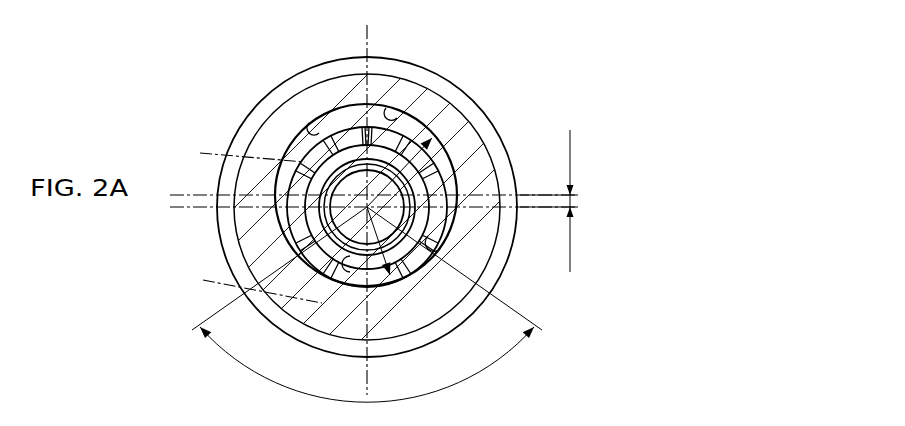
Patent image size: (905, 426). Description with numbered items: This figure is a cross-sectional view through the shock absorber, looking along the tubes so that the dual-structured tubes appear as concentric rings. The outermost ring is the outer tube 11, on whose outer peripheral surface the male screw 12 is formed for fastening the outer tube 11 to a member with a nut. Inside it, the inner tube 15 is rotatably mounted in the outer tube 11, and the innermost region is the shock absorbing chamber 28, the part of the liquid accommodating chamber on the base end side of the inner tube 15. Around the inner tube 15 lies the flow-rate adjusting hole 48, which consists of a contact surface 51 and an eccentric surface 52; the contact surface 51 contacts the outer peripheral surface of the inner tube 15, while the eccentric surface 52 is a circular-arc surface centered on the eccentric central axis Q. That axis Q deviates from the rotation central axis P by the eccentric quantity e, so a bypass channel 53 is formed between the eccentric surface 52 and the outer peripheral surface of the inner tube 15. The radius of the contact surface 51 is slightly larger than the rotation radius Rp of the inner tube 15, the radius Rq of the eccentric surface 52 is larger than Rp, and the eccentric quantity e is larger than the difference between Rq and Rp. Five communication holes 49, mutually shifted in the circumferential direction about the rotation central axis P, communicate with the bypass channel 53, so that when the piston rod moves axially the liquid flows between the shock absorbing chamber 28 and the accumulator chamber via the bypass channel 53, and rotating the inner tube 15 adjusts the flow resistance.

The outer tube 11 is at (250, 172).
The male screw 12 is at (468, 103).
The inner tube 15 is at (285, 222).
The shock absorbing chamber 28 is at (332, 298).
The flow-rate adjusting hole 48 is at (406, 104).
The communication holes 49 is at (371, 125).
The contact surface 51 is at (485, 289).
The eccentric surface 52 is at (300, 124).
The bypass channel 53 is at (328, 113).
The radius of the eccentric surface Rq is at (432, 138).
The rotation radius Rp is at (390, 275).
The rotation central axis P is at (252, 285).
The eccentric central axis Q is at (247, 136).
The eccentric quantity e is at (559, 201).